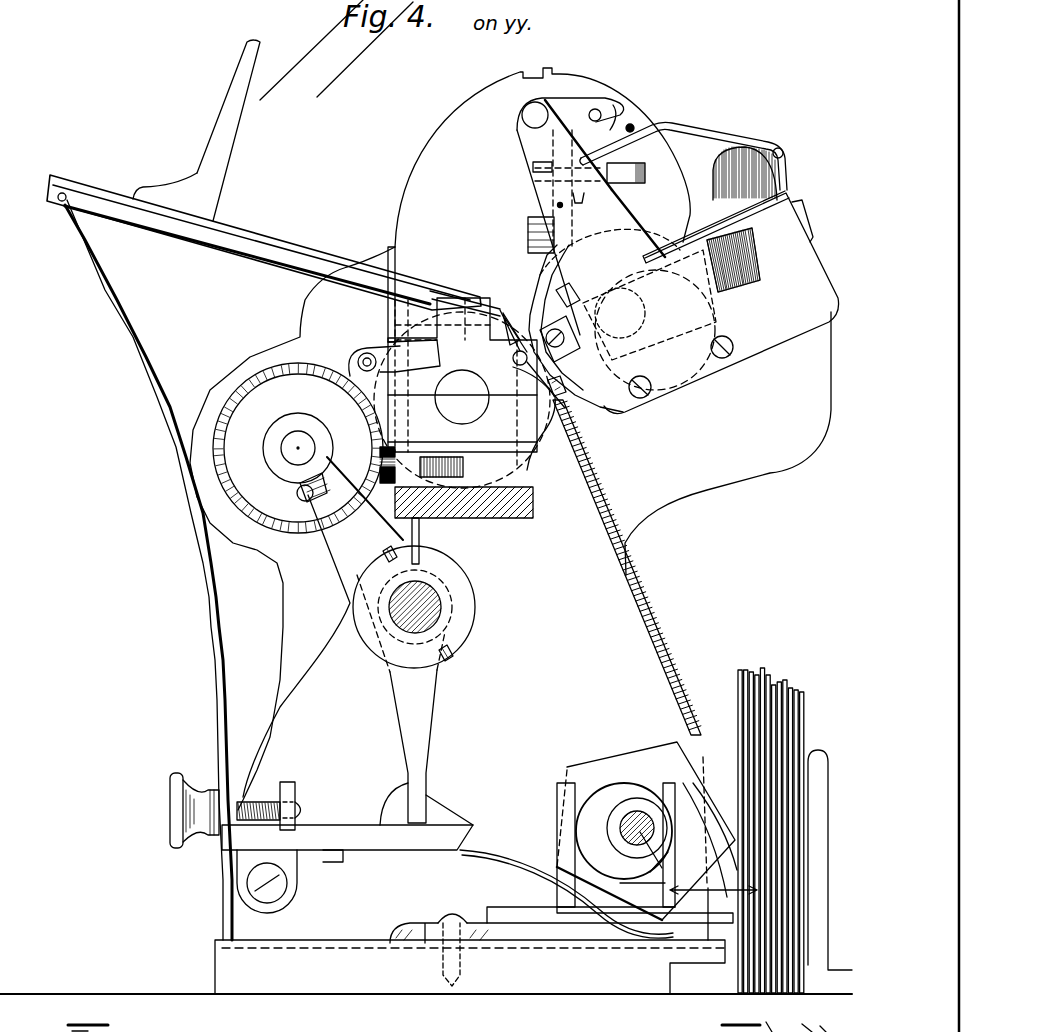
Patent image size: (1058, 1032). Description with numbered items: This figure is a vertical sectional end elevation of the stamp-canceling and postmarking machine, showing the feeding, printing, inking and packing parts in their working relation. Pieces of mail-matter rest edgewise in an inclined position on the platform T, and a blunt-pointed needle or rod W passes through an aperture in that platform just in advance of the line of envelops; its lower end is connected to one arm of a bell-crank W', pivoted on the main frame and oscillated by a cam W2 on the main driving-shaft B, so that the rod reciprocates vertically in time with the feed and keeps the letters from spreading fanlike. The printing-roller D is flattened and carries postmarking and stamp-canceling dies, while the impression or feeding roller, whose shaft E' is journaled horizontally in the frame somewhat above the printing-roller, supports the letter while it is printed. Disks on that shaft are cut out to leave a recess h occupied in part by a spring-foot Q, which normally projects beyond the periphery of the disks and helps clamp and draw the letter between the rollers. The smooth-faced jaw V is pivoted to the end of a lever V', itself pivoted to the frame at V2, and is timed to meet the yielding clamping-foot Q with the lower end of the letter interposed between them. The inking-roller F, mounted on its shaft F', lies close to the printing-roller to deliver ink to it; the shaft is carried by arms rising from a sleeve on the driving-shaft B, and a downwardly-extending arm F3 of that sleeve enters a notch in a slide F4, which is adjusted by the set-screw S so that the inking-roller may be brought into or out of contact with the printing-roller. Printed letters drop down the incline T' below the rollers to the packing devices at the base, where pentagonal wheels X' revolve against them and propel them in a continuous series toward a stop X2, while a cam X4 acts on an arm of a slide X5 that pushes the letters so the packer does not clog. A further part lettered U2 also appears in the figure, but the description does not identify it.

The platform T is at (273, 178).
The incline T' is at (627, 567).
The blunt-pointed needle or rod W is at (418, 284).
The bell-crank W' is at (441, 541).
The cam W2 is at (467, 613).
The main driving-shaft B is at (420, 612).
The spring-foot Q is at (537, 342).
The smooth-faced jaw V is at (508, 348).
The lever V' is at (401, 341).
The pivot of lever V' V2 is at (367, 354).
The printing-roller D is at (530, 452).
The impression-roller shaft E' is at (684, 303).
The lever arm U2 is at (700, 133).
The recess h is at (567, 396).
The inking-roller F is at (277, 444).
The inking-roller shaft F' is at (270, 457).
The downwardly-extending arm F3 is at (403, 712).
The slide F4 is at (400, 790).
The set-screw S is at (213, 787).
The pentagonal wheels X' is at (647, 824).
The stop X2 is at (812, 760).
The cam X4 is at (620, 794).
The slide X5 is at (527, 907).